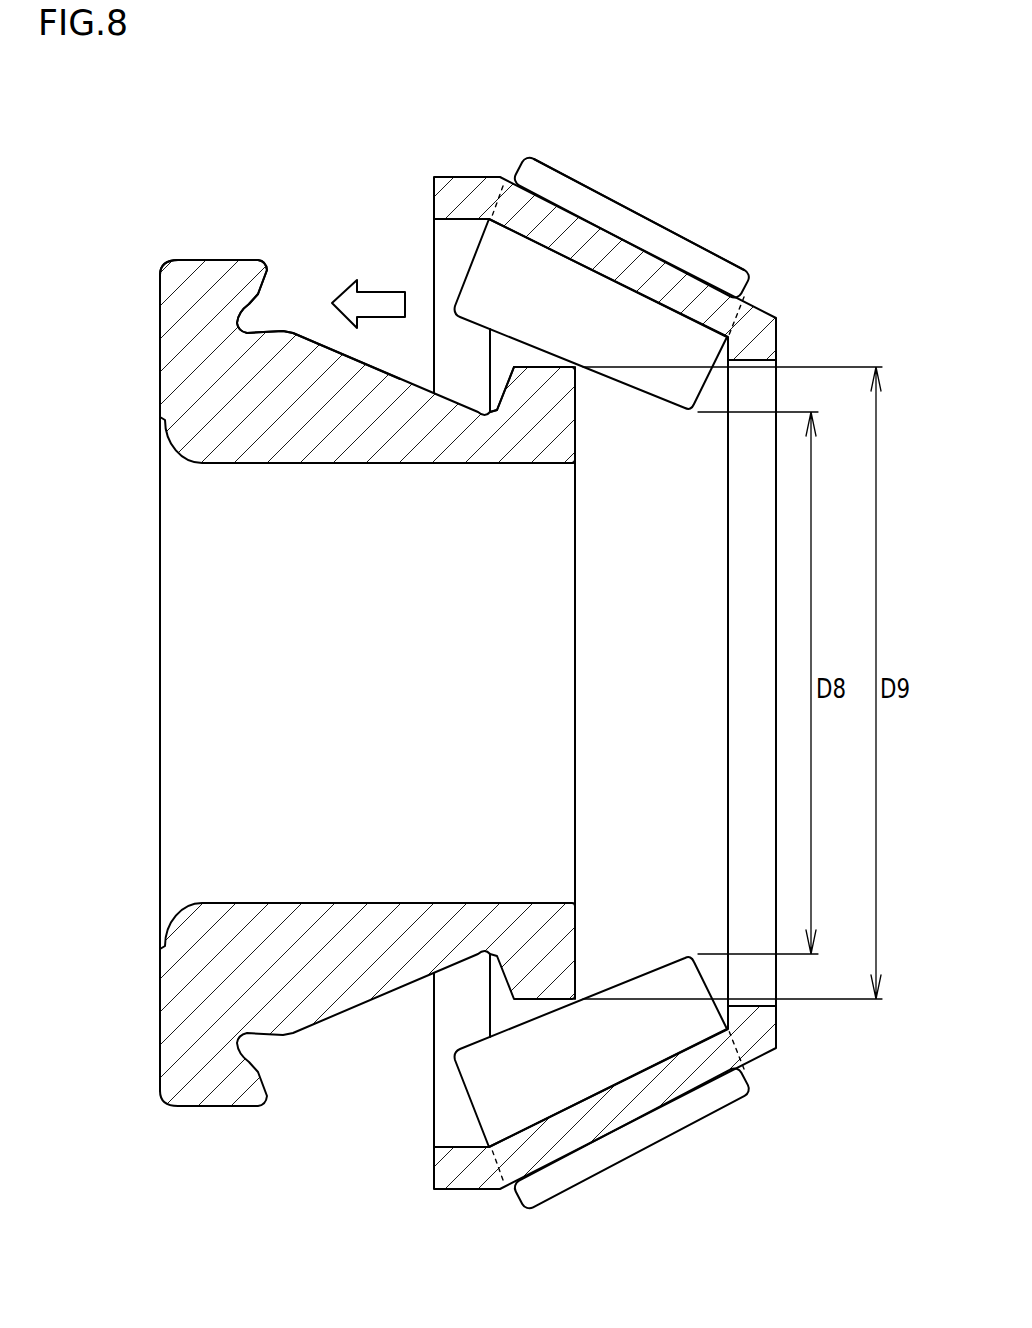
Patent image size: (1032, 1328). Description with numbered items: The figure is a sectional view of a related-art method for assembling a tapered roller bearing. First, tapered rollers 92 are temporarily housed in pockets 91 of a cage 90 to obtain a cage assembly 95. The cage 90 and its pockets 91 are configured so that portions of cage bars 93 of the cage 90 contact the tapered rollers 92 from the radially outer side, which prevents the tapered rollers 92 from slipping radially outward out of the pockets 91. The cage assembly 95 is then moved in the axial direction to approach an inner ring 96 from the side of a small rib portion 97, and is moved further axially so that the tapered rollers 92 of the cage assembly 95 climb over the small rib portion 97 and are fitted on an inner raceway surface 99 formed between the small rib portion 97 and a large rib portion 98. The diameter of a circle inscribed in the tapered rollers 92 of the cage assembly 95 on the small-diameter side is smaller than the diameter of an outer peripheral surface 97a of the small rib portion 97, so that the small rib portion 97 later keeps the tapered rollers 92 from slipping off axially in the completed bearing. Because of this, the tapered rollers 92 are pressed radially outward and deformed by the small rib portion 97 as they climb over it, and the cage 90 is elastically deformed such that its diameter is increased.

The cage 90 is at (769, 313).
The pockets 91 is at (690, 250).
The tapered rollers 92 is at (627, 200).
The cage bars 93 is at (580, 235).
The cage assembly 95 is at (563, 150).
The inner ring 96 is at (195, 380).
The small rib portion 97 is at (545, 393).
The outer peripheral surface 97a is at (538, 367).
The large rib portion 98 is at (185, 290).
The inner raceway surface 99 is at (303, 333).